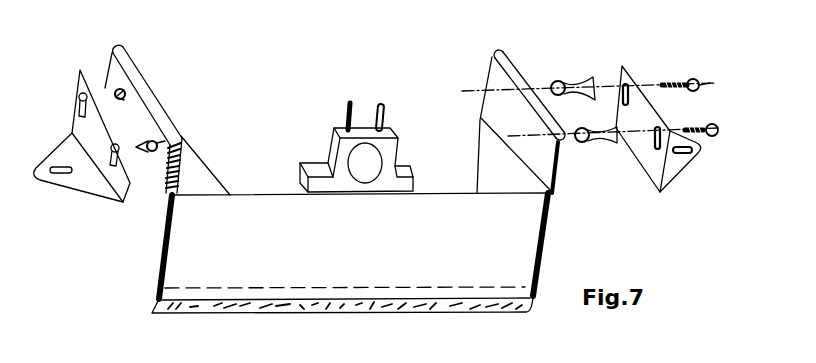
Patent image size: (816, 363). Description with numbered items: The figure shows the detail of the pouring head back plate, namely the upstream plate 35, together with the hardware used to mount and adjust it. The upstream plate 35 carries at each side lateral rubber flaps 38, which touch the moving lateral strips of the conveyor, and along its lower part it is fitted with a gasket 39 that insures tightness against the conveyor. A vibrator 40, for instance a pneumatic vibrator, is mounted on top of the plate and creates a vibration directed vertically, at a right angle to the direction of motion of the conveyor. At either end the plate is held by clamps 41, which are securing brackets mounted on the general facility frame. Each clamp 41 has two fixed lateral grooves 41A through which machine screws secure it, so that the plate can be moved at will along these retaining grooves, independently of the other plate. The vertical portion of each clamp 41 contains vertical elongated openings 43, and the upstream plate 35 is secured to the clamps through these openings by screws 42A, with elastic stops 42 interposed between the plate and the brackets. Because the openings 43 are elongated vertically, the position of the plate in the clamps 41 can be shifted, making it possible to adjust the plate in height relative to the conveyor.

The upstream plate 35 is at (498, 245).
The lateral rubber flaps 38 is at (160, 241).
The gasket 39 is at (250, 305).
The vibrator 40 is at (330, 148).
The clamps 41 is at (682, 162).
The lateral grooves 41A is at (62, 175).
The elastic stops 42 is at (578, 84).
The screws 42A is at (672, 82).
The vertical elongated openings 43 is at (75, 103).